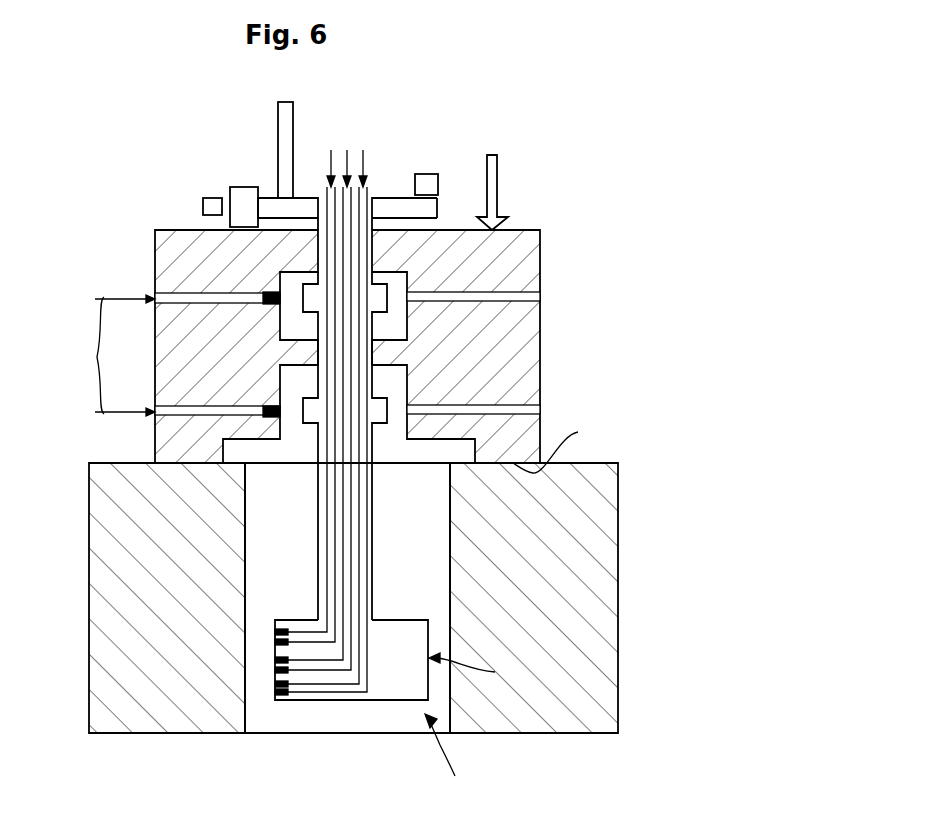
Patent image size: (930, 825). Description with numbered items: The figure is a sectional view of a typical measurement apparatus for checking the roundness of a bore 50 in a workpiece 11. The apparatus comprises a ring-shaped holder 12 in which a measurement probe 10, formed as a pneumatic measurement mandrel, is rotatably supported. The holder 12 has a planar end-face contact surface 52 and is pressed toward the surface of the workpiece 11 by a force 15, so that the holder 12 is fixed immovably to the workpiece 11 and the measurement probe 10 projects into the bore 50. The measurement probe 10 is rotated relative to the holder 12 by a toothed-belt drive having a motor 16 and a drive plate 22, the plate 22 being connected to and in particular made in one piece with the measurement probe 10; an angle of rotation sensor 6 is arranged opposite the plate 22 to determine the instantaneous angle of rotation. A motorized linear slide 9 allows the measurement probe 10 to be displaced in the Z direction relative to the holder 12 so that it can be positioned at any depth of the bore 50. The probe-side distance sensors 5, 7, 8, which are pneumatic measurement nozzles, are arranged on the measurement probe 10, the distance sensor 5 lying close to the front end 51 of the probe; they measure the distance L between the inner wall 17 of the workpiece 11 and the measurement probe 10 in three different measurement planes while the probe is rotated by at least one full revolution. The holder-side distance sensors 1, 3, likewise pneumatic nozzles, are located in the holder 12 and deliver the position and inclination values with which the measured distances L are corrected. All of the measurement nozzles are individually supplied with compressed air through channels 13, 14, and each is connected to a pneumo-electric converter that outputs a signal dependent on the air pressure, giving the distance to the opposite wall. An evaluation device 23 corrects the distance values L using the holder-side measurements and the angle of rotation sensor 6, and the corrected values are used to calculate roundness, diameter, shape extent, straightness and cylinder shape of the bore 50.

The first distance sensor at the holder side 1 is at (270, 296).
The third distance sensor at the holder side 3 is at (268, 407).
The distance sensor at the measurement probe side 5 is at (275, 685).
The angle of rotation sensor 6 is at (427, 180).
The distance sensor at the measurement probe side 7 is at (275, 632).
The distance sensor at the measurement probe side 8 is at (275, 660).
The motorized linear slide 9 is at (287, 122).
The measurement probe 10 is at (402, 622).
The workpiece 11 is at (105, 517).
The holder 12 is at (532, 257).
The channel 13 is at (349, 152).
The channel 14 is at (112, 355).
The force 15 is at (493, 172).
The motor 16 is at (248, 195).
The inner wall 17 is at (250, 540).
The drive plate 22 is at (407, 208).
The evaluation device 23 is at (212, 198).
The bore 50 is at (452, 755).
The front end of the measurement probe 51 is at (475, 671).
The planar end-face contact surface 52 is at (558, 442).
The distance L is at (275, 707).